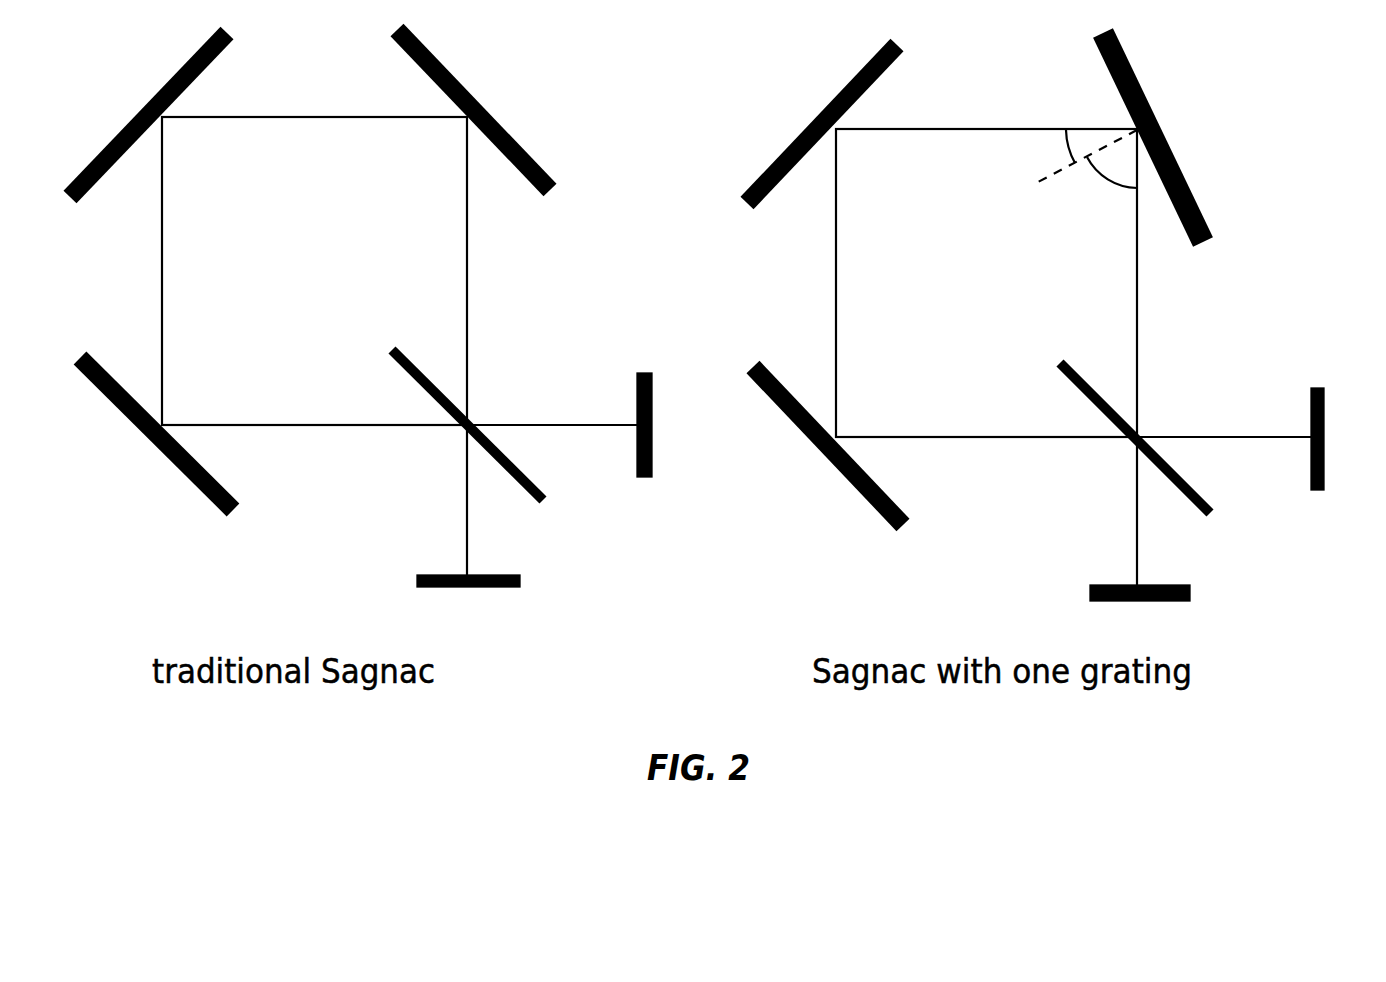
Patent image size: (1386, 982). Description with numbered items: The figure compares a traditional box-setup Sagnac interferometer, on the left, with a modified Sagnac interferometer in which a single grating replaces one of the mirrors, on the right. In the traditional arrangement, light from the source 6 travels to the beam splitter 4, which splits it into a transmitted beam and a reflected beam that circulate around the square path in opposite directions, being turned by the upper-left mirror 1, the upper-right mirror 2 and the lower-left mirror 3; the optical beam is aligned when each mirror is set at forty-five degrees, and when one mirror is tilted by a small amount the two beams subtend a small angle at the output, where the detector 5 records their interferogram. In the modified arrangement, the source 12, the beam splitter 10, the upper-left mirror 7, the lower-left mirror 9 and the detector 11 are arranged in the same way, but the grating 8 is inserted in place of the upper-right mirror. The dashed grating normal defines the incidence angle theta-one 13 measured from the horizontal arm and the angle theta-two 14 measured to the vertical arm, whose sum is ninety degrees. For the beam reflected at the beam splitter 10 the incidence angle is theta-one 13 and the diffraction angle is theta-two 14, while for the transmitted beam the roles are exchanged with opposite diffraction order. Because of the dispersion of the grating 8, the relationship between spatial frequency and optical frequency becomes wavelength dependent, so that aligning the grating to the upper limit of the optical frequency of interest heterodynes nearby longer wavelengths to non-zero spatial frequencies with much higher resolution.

The mirror (traditional Sagnac, upper left) 1 is at (148, 115).
The mirror (traditional Sagnac, upper right) 2 is at (477, 110).
The mirror (traditional Sagnac, lower left) 3 is at (154, 434).
The beam splitter (traditional Sagnac) 4 is at (429, 408).
The detector (traditional Sagnac) 5 is at (642, 409).
The source (traditional Sagnac) 6 is at (468, 599).
The mirror (Sagnac with one grating, upper left) 7 is at (822, 124).
The grating 8 is at (1180, 137).
The mirror (Sagnac with one grating, lower left) 9 is at (825, 446).
The beam splitter (Sagnac with one grating) 10 is at (1097, 420).
The detector (Sagnac with one grating) 11 is at (1315, 422).
The source (Sagnac with one grating) 12 is at (1140, 611).
The angle theta 1 at grating 13 is at (1048, 151).
The angle theta 2 at grating 14 is at (1111, 190).